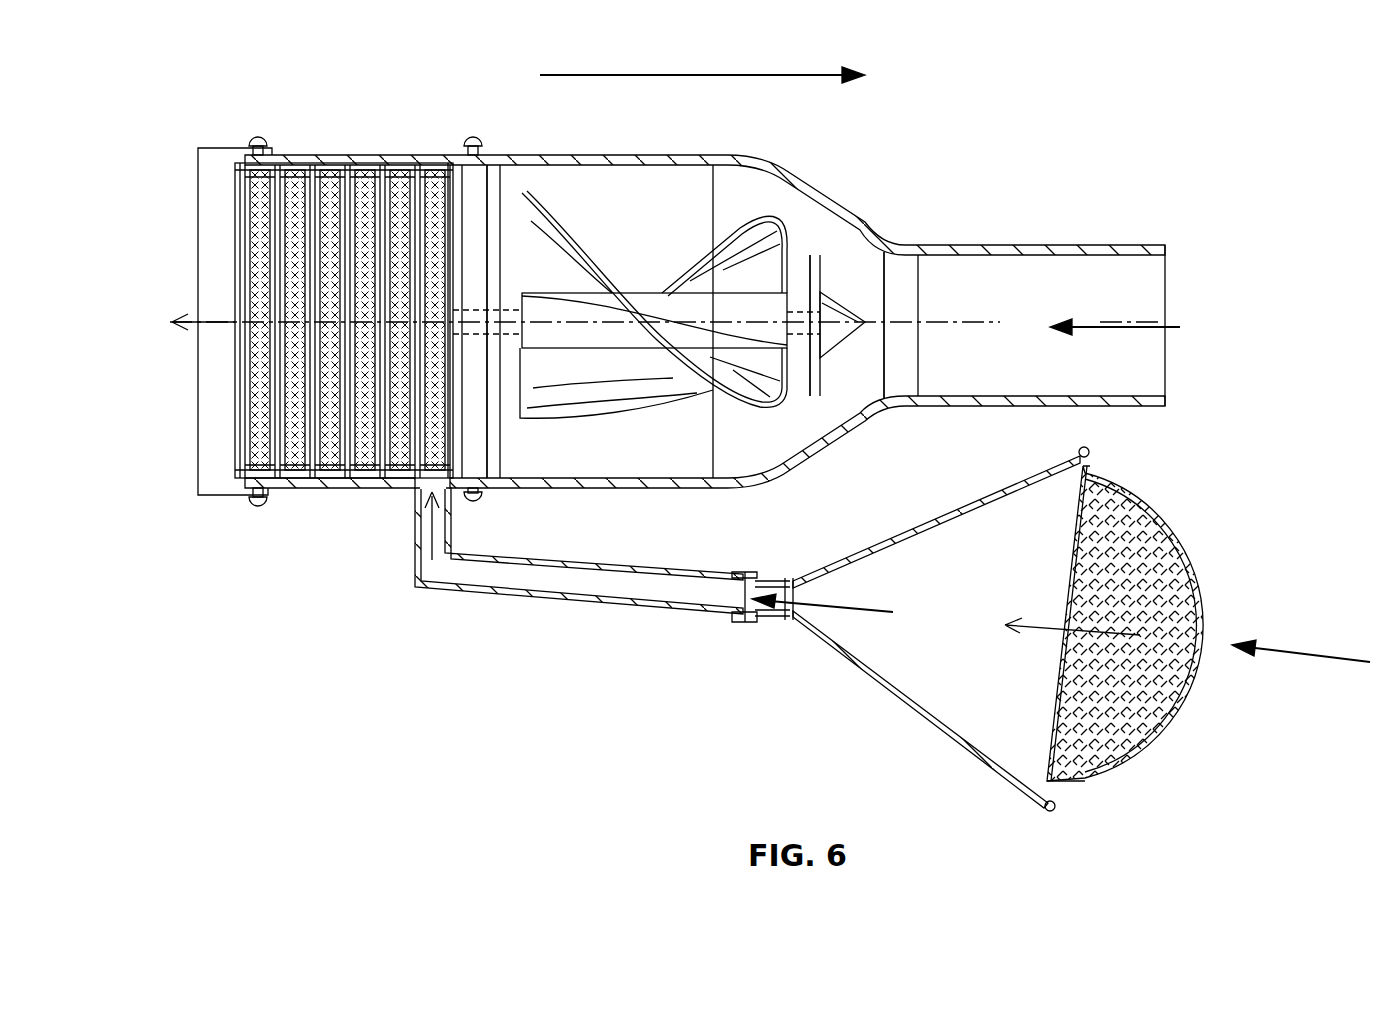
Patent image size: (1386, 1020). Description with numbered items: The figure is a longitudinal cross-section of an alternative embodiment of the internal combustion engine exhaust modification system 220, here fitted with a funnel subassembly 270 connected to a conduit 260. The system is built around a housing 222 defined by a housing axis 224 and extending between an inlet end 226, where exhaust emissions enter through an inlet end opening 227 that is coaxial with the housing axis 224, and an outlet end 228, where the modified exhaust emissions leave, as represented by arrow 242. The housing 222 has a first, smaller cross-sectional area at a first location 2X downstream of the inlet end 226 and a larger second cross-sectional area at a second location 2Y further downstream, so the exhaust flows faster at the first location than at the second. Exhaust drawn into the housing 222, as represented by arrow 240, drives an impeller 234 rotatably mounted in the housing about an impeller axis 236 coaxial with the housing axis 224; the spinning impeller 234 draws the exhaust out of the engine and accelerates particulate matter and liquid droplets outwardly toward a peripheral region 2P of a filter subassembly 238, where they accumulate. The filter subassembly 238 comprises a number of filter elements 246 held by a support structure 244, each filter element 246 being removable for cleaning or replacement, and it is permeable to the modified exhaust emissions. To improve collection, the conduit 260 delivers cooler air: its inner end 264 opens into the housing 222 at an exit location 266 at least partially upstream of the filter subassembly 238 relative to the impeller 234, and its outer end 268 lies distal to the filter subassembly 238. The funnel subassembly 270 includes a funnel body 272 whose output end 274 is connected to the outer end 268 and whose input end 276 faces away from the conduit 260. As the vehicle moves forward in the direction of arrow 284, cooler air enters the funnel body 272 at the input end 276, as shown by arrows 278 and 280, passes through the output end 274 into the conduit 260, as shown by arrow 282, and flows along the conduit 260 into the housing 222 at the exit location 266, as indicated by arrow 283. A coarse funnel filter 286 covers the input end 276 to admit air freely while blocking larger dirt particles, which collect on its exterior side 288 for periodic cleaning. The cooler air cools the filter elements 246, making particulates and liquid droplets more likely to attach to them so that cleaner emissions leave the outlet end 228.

The internal combustion engine exhaust modification system 220 is at (705, 295).
The housing 222 is at (655, 157).
The housing axis 224 is at (908, 326).
The inlet end 226 is at (1170, 247).
The inlet end opening 227 is at (1157, 291).
The outlet end 228 is at (198, 172).
The impeller 234 is at (588, 400).
The axis of the impeller 236 is at (595, 281).
The filter subassembly 238 is at (348, 319).
The arrow 240 is at (1088, 335).
The arrow 242 is at (215, 325).
The support structure 244 is at (236, 180).
The filter elements 246 is at (280, 483).
The conduit 260 is at (550, 606).
The inner end 264 is at (468, 495).
The exit location 266 is at (458, 440).
The outer end 268 is at (745, 572).
The funnel subassembly 270 is at (920, 748).
The funnel body 272 is at (925, 521).
The output end 274 is at (740, 622).
The input end 276 is at (1080, 455).
The arrow 278 is at (1300, 668).
The arrow 280 is at (1050, 628).
The arrow 282 is at (832, 620).
The arrow 283 is at (422, 560).
The arrow 284 is at (654, 70).
The funnel filter 286 is at (1100, 762).
The exterior side 288 is at (1205, 680).
The peripheral region 2P is at (370, 165).
The first location 2X is at (815, 186).
The second location 2Y is at (490, 162).